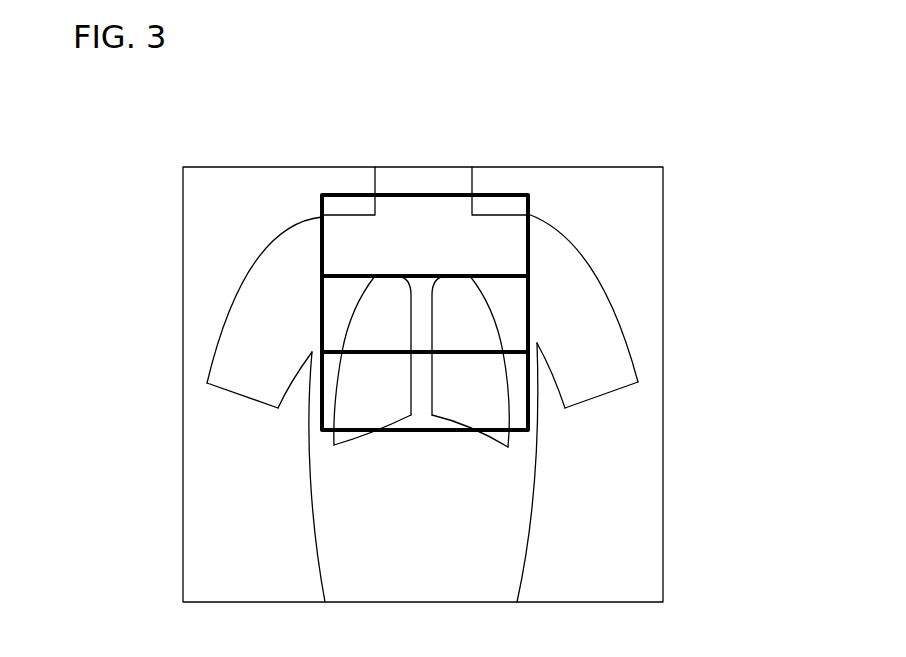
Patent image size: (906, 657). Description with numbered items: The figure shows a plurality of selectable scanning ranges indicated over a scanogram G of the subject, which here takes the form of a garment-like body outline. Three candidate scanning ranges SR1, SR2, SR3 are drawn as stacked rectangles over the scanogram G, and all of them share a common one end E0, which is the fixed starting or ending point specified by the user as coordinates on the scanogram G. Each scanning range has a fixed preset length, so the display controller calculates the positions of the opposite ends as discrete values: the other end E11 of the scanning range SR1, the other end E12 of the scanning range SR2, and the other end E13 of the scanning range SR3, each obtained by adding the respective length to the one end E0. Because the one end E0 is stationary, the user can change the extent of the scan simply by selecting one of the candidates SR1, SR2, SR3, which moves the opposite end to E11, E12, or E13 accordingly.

The scanogram G is at (256, 262).
The position of one end E0 is at (492, 195).
The scanning range SR1 is at (528, 247).
The scanning range SR2 is at (528, 316).
The scanning range SR3 is at (528, 392).
The position of other end E11 is at (355, 277).
The position of other end E12 is at (372, 355).
The position of other end E13 is at (437, 430).